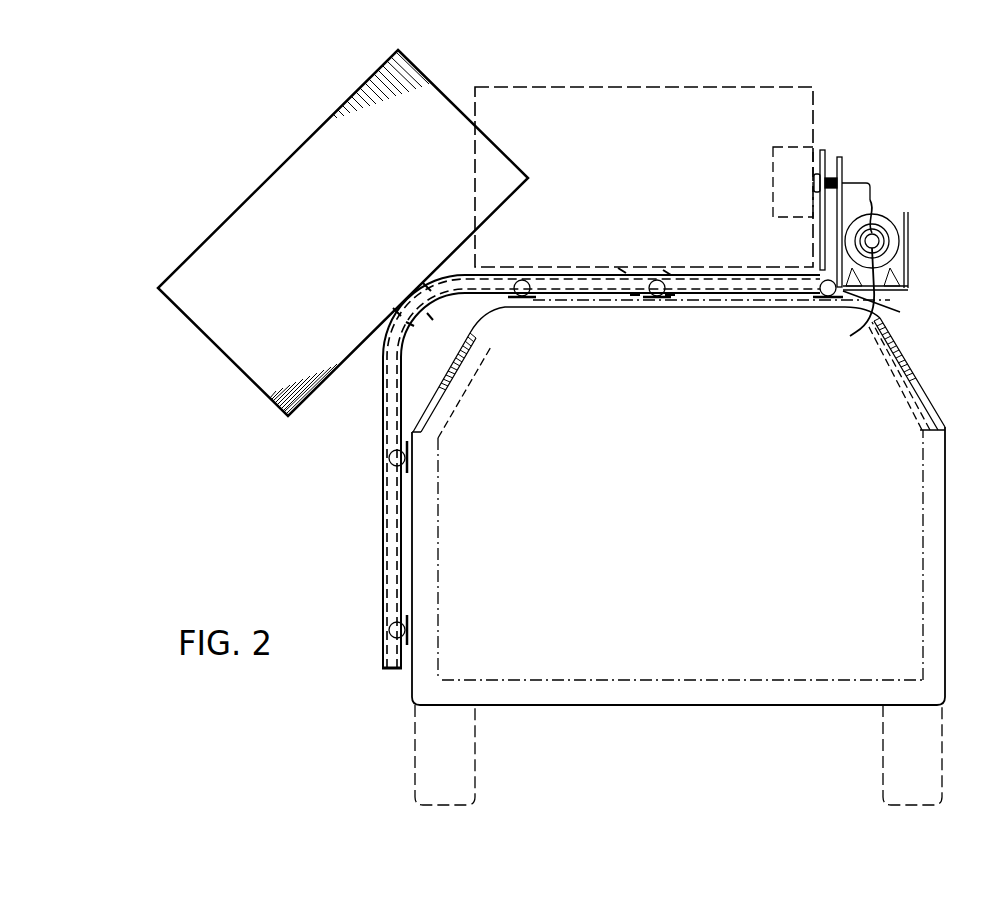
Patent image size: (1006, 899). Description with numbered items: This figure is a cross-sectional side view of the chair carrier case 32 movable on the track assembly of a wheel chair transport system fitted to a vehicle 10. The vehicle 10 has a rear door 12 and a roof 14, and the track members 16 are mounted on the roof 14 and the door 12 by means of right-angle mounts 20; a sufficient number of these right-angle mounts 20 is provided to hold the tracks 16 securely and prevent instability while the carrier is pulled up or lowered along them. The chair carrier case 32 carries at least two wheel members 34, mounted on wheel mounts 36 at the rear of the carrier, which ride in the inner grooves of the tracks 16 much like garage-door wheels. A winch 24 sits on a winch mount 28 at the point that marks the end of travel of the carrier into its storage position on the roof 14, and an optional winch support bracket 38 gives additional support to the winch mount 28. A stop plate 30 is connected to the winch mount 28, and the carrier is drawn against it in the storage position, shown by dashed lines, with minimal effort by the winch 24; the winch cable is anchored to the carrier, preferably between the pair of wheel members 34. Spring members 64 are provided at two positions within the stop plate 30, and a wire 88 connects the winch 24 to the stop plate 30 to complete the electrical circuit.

The vehicle 10 is at (673, 500).
The rear door 12 is at (423, 453).
The roof 14 is at (577, 308).
The tracks 16 is at (548, 273).
The right-angle mounts 20 is at (523, 296).
The winch 24 is at (897, 237).
The winch mount 28 is at (912, 252).
The stop plate 30 is at (827, 155).
The chair carrier case 32 is at (262, 217).
The wheel members 34 is at (430, 318).
The wheel mounts 36 is at (427, 287).
The winch support bracket 38 is at (887, 291).
The spring members 64 is at (813, 183).
The wire 88 is at (875, 212).